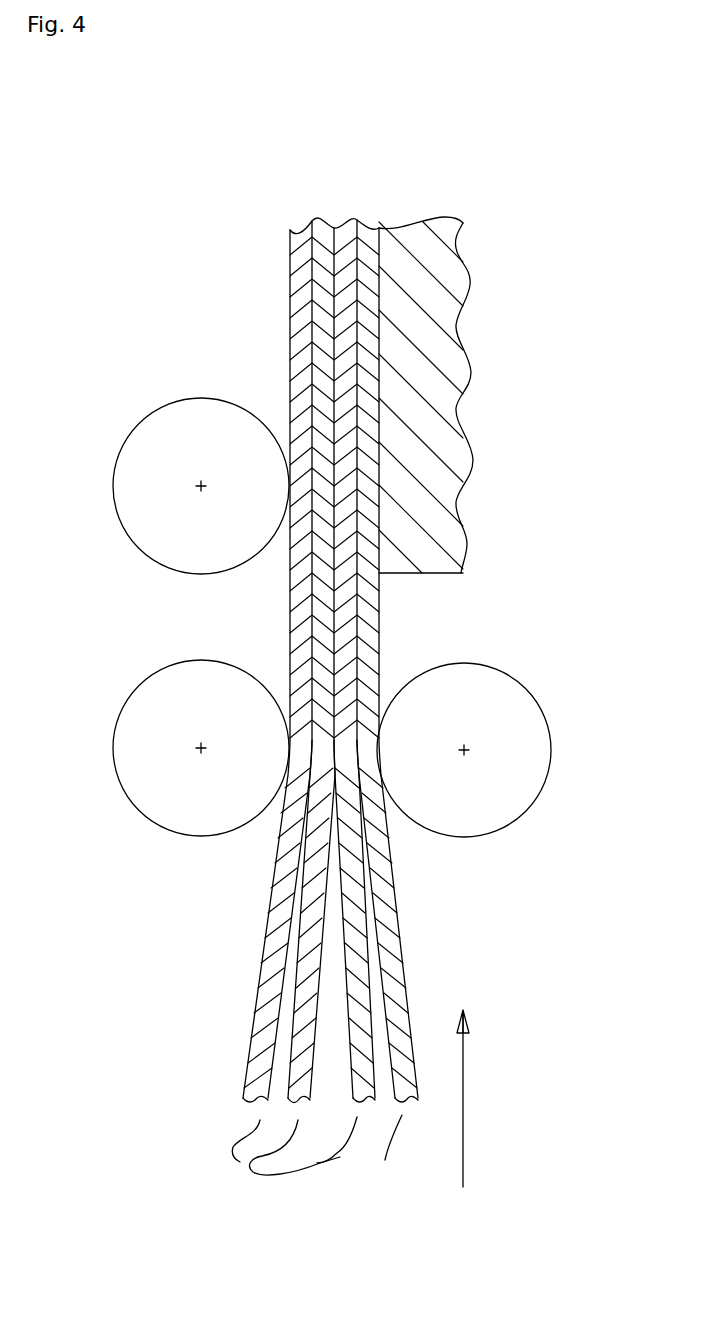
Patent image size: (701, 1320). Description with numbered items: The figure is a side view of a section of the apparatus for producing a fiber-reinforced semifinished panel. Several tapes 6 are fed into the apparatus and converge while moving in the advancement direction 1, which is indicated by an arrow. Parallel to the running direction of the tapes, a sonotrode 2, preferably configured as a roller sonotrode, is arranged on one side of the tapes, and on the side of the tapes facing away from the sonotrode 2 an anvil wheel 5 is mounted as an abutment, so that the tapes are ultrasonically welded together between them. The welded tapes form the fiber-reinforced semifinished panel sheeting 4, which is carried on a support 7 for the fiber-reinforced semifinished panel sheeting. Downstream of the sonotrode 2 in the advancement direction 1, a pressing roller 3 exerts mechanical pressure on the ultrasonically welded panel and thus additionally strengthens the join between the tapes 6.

The advancement direction 1 is at (463, 1143).
The sonotrode 2 is at (175, 812).
The pressing roller 3 is at (160, 455).
The fiber-reinforced semifinished panel sheeting 4 is at (288, 213).
The anvil wheel 5 is at (500, 797).
The tape 6 is at (385, 1150).
The support for fiber-reinforced semifinished panel sheeting 7 is at (430, 558).